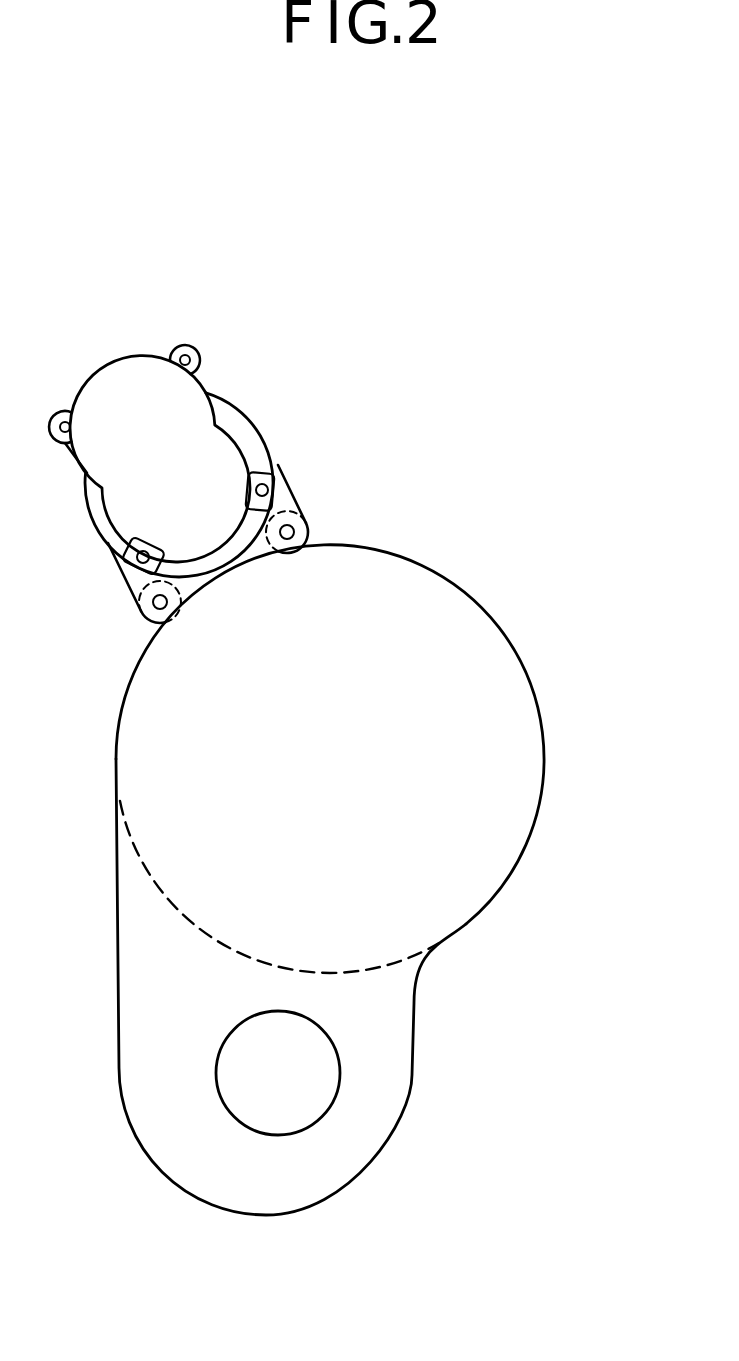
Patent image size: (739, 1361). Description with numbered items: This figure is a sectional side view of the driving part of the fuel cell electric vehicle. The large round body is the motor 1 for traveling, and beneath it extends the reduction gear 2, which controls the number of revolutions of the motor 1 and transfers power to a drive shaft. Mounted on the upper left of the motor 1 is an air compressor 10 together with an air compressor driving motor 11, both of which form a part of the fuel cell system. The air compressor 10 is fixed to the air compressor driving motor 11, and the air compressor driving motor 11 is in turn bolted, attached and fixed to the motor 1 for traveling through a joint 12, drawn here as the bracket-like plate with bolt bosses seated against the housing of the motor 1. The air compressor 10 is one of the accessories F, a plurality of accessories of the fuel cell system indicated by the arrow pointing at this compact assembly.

The motor for traveling 1 is at (420, 587).
The reduction gear 2 is at (385, 1121).
The air compressor 10 is at (108, 393).
The air compressor driving motor 11 is at (257, 457).
The joint 12 is at (200, 367).
The accessories F is at (285, 350).